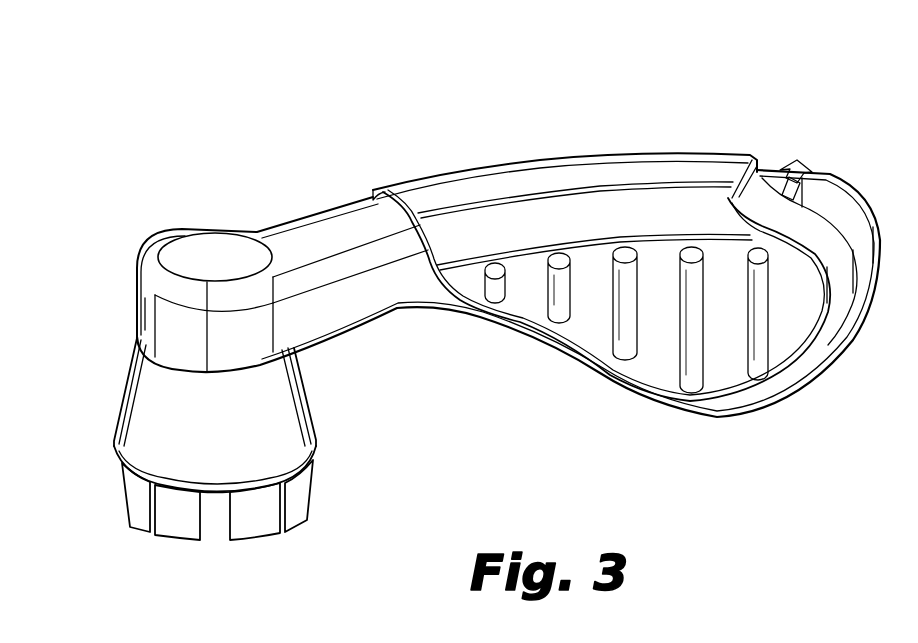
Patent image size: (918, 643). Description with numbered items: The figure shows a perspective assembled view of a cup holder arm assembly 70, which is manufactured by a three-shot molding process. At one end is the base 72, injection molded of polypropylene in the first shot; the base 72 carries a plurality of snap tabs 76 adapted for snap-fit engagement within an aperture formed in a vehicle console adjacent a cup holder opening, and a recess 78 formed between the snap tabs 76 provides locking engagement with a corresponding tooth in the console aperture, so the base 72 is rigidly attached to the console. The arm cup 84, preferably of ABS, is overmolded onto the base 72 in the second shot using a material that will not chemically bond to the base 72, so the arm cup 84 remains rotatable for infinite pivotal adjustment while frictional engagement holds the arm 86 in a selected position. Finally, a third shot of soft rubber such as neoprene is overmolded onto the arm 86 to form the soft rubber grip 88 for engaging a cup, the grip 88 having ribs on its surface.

The cup holder arm assembly 70 is at (311, 168).
The base 72 is at (145, 378).
The snap tabs 76 is at (167, 527).
The recess 78 is at (217, 530).
The arm cup 84 is at (143, 298).
The arm 86 is at (381, 298).
The soft rubber grip 88 is at (571, 178).